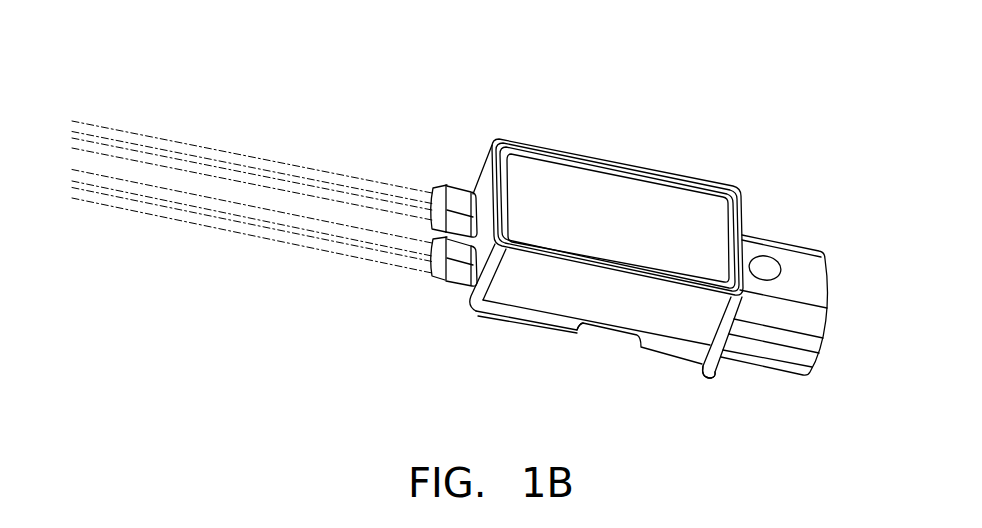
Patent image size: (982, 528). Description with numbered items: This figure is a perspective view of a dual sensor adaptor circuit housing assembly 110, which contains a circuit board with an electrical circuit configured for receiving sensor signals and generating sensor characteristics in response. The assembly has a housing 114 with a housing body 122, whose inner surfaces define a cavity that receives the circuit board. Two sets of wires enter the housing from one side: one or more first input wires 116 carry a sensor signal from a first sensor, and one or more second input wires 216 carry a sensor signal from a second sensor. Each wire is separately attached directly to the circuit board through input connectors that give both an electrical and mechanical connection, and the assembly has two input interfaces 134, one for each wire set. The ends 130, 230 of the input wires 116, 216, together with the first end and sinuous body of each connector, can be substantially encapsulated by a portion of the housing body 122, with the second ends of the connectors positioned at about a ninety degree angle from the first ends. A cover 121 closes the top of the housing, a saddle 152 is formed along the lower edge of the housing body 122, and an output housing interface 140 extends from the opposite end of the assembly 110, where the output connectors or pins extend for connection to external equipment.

The sensor adaptor circuit housing assembly 110 is at (659, 95).
The housing 114 is at (675, 382).
The first input wires 116 is at (148, 160).
The cover 121 is at (680, 200).
The housing body 122 is at (535, 299).
The end of first input wire 130 is at (425, 176).
The input interface 134 is at (460, 201).
The output housing interface 140 is at (783, 265).
The saddle 152 is at (602, 360).
The second input wires 216 is at (222, 207).
The end of second input wire 230 is at (410, 295).